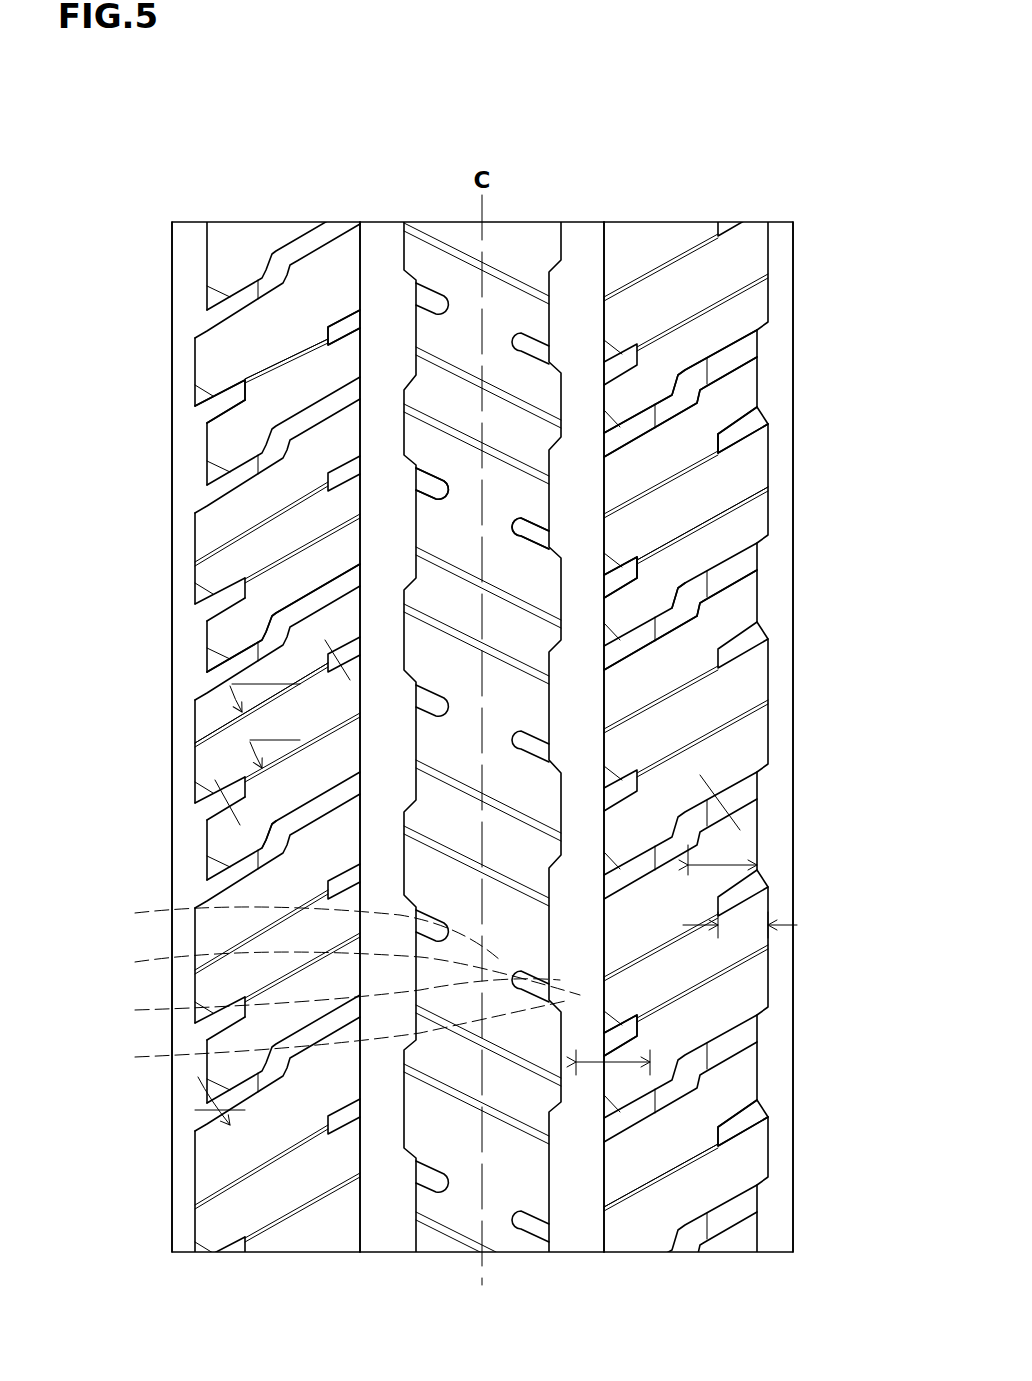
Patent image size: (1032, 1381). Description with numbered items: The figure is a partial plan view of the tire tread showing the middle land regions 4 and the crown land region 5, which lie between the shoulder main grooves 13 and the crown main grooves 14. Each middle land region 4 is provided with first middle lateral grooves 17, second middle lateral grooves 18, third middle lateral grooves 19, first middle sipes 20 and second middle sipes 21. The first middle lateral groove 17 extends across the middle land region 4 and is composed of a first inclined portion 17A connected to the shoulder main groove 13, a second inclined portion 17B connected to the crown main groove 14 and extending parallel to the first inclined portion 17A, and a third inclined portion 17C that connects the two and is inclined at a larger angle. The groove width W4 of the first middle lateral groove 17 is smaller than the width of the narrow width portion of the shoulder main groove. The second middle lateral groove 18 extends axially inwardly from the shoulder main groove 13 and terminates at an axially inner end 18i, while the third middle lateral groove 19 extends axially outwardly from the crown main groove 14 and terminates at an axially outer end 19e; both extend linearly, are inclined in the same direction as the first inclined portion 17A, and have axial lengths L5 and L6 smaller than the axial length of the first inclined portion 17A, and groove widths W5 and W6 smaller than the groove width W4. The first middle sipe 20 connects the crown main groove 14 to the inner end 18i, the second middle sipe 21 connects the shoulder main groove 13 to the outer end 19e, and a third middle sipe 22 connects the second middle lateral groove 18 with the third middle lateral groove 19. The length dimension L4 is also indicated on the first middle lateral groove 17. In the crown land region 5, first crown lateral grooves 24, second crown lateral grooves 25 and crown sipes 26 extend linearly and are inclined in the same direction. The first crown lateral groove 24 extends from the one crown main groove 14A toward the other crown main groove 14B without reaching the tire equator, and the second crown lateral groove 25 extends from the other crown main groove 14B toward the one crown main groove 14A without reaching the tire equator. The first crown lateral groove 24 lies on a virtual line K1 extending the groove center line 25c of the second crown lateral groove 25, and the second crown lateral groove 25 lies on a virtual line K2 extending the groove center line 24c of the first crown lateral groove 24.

The middle land region 4 is at (305, 215).
The crown land region 5 is at (525, 215).
The shoulder main groove 13 is at (190, 250).
The crown main groove 14 is at (383, 255).
The one crown main groove 14A is at (575, 1205).
The other crown main groove 14B is at (389, 1205).
The first middle lateral groove 17 is at (687, 387).
The first inclined portion 17A is at (745, 577).
The second inclined portion 17B is at (660, 640).
The third inclined portion 17C is at (702, 607).
The second middle lateral groove 18 is at (238, 395).
The axially inner end 18i is at (722, 436).
The third middle lateral groove 19 is at (340, 328).
The axially outer end 19e is at (642, 570).
The first middle sipe 20 is at (262, 822).
The second middle sipe 21 is at (335, 660).
The third middle sipe 22 is at (287, 367).
The first crown lateral groove 24 is at (520, 523).
The groove center line of first crown lateral groove 24c is at (325, 1035).
The second crown lateral groove 25 is at (410, 468).
The groove center line of second crown lateral groove 25c is at (290, 930).
The crown sipe 26 is at (262, 620).
The virtual line K1 is at (334, 972).
The virtual line K2 is at (324, 1001).
The groove width of first middle lateral groove W4 is at (740, 800).
The groove width of second middle lateral groove W5 is at (215, 812).
The groove width of third middle lateral groove W6 is at (260, 860).
The length of connecting portion L4 is at (758, 865).
The axial length of second middle lateral groove L5 is at (775, 930).
The axial length of third middle lateral groove L6 is at (650, 1062).